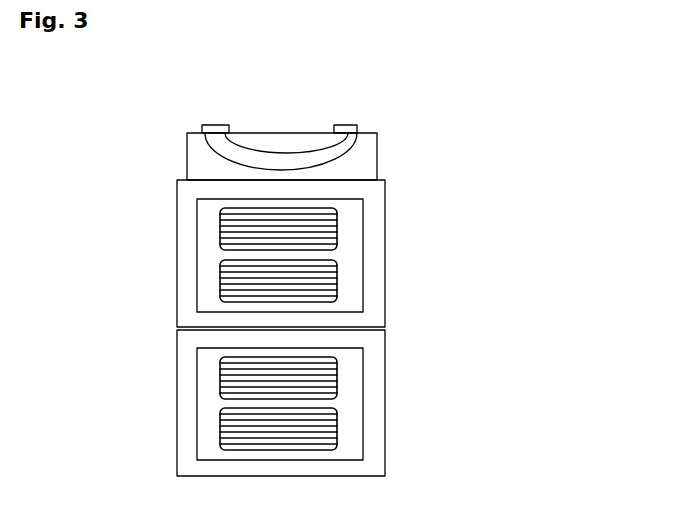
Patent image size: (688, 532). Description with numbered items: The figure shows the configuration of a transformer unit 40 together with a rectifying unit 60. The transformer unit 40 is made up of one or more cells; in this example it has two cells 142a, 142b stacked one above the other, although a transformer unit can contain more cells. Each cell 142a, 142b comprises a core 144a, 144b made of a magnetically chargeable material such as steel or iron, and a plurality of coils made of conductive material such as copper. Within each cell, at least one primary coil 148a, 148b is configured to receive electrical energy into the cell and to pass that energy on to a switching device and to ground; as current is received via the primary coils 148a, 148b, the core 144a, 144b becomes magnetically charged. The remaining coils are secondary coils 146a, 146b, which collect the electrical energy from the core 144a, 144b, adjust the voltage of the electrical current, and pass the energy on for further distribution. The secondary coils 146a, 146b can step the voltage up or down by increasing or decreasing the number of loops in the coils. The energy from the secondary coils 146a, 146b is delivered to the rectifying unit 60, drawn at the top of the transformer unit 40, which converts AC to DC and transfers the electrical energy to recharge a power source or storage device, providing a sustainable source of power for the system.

The transformer unit 40 is at (541, 110).
The rectifying unit 60 is at (347, 152).
The cell 142a is at (169, 188).
The cell 142b is at (169, 337).
The core 144a is at (375, 218).
The core 144b is at (376, 370).
The secondary coil 146a is at (337, 240).
The primary coil 148a is at (337, 290).
The secondary coil 146b is at (337, 392).
The primary coil 148b is at (337, 442).